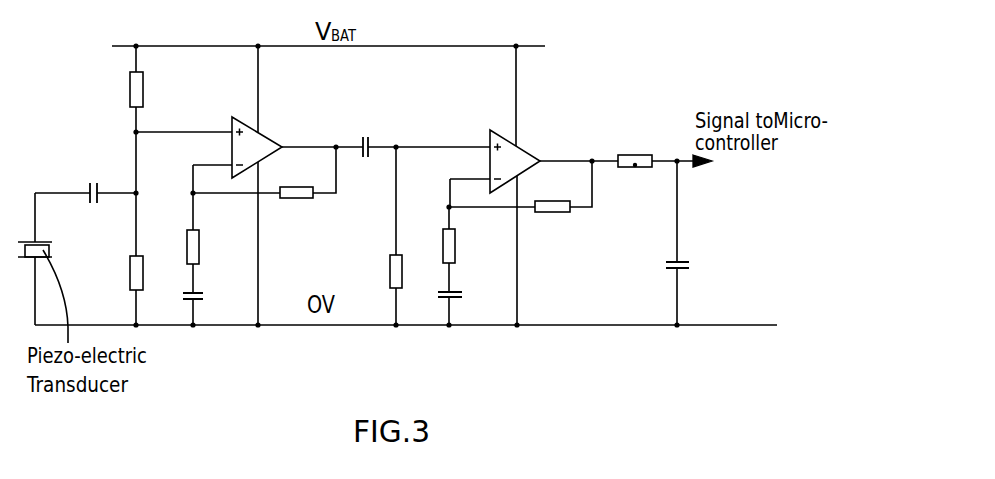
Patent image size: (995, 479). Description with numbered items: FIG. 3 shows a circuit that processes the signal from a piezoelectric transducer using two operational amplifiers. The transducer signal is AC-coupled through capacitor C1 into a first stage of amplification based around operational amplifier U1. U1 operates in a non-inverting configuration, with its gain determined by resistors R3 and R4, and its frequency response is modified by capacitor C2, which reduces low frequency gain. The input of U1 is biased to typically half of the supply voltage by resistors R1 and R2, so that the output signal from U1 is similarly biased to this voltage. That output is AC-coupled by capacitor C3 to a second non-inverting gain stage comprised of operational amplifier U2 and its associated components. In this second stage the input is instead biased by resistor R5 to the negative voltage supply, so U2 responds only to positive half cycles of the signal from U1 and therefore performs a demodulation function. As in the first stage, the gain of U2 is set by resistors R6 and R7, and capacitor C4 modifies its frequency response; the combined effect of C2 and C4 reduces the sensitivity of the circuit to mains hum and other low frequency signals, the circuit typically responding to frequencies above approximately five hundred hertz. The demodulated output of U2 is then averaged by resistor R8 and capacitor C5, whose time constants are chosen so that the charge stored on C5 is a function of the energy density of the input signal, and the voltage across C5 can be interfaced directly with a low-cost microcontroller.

The resistor R1 is at (153, 90).
The resistor R2 is at (120, 273).
The resistor R3 is at (209, 247).
The resistor R4 is at (296, 206).
The resistor R5 is at (381, 271).
The resistor R6 is at (465, 246).
The resistor R7 is at (552, 222).
The resistor R8 is at (635, 143).
The capacitor C1 is at (95, 174).
The capacitor C2 is at (211, 298).
The capacitor C3 is at (367, 130).
The capacitor C4 is at (466, 295).
The capacitor C5 is at (694, 269).
The operational amplifier U1 is at (263, 141).
The operational amplifier U2 is at (523, 157).